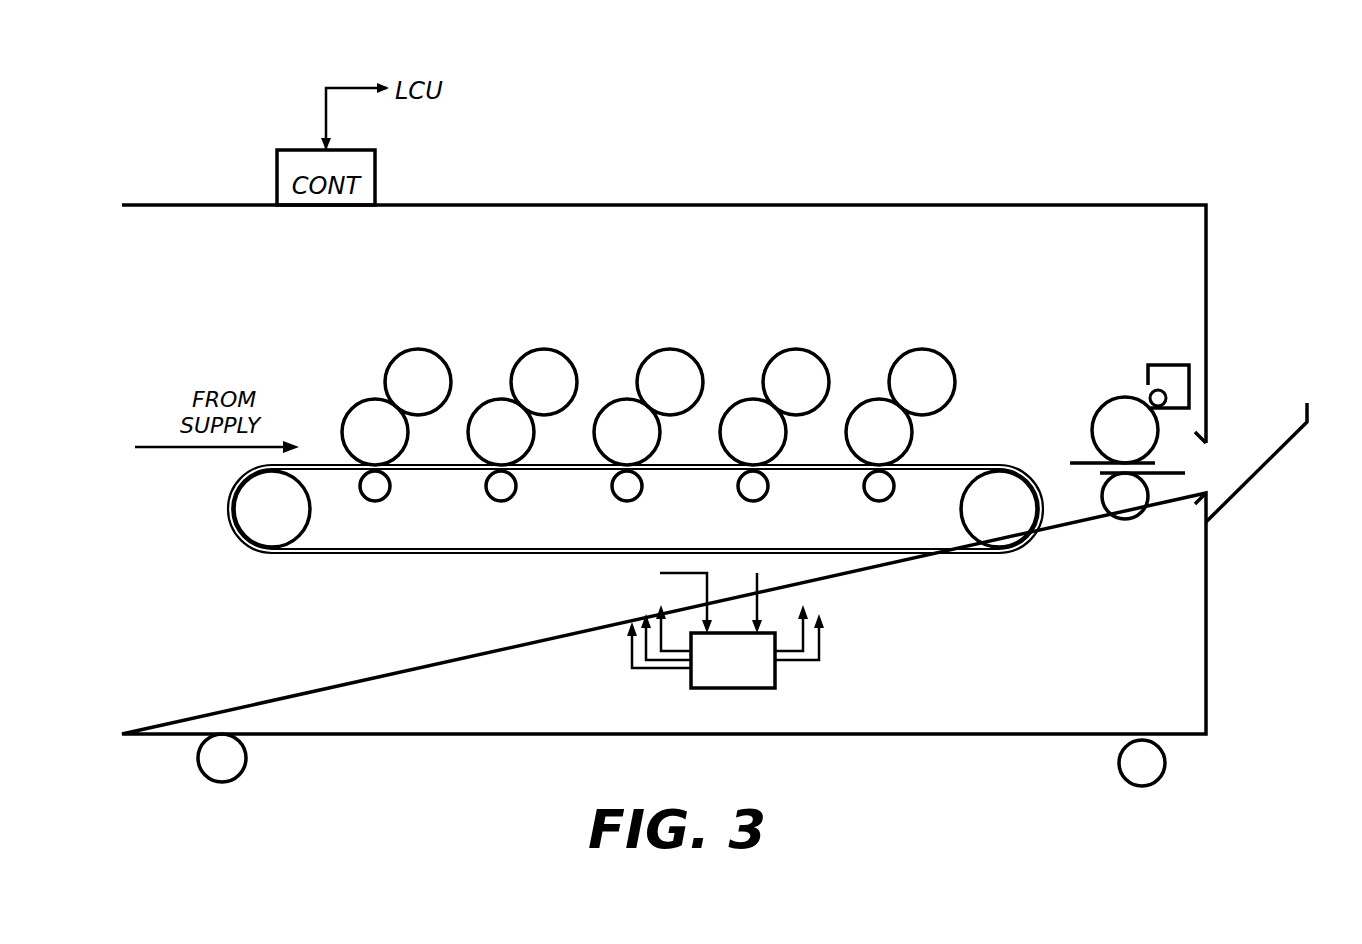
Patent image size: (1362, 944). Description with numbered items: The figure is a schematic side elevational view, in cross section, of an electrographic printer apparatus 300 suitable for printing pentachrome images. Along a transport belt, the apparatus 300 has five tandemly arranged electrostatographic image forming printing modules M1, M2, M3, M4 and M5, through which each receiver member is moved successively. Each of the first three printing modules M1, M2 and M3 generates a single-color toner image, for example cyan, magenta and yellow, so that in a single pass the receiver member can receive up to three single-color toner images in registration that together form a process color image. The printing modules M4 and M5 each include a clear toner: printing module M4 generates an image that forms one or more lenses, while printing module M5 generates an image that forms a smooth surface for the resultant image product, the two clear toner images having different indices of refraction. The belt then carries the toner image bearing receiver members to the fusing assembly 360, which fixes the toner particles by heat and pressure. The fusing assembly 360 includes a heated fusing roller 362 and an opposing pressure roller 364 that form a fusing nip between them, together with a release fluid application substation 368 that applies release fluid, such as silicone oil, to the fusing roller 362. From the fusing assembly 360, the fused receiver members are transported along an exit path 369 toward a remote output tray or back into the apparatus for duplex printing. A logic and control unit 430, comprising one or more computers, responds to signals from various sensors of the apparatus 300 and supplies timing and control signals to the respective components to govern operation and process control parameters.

The electrographic printer apparatus 300 is at (1041, 106).
The printing module M1 is at (382, 346).
The printing module M2 is at (509, 346).
The printing module M3 is at (634, 346).
The printing module M4 is at (761, 346).
The printing module M5 is at (887, 346).
The fusing assembly 360 is at (1108, 431).
The fusing roller 362 is at (1112, 398).
The pressure roller 364 is at (1123, 520).
The release fluid application substation 368 is at (1173, 365).
The output tray / exit guide 369 is at (1255, 473).
The logic and control unit 430 is at (708, 688).